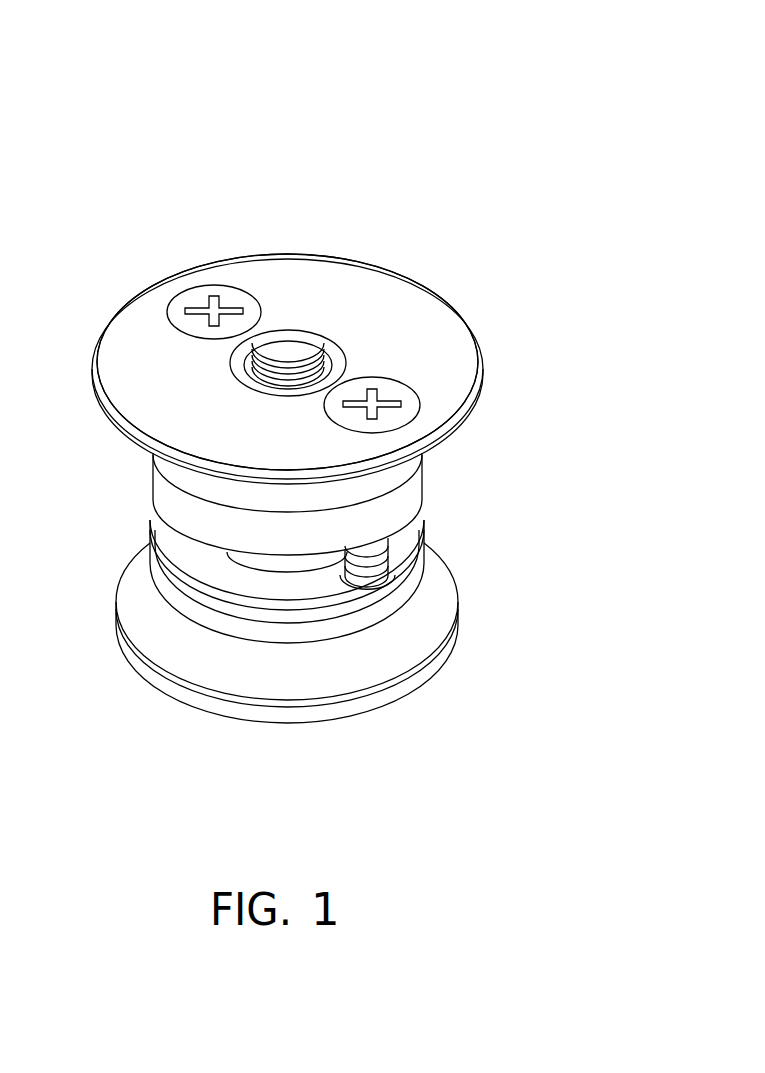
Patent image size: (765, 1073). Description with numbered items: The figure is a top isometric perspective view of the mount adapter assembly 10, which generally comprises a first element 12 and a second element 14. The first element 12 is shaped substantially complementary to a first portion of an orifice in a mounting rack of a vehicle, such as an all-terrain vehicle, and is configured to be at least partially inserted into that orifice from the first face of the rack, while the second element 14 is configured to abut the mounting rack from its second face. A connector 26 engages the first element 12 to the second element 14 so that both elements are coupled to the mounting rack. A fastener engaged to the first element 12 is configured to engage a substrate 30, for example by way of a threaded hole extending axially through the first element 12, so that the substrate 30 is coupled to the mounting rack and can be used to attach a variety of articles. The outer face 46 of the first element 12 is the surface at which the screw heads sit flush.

The mount adapter assembly 10 is at (548, 110).
The first element 12 is at (474, 358).
The second element 14 is at (418, 647).
The connector 26 is at (187, 322).
The substrate 30 is at (290, 365).
The outer face 46 is at (413, 348).